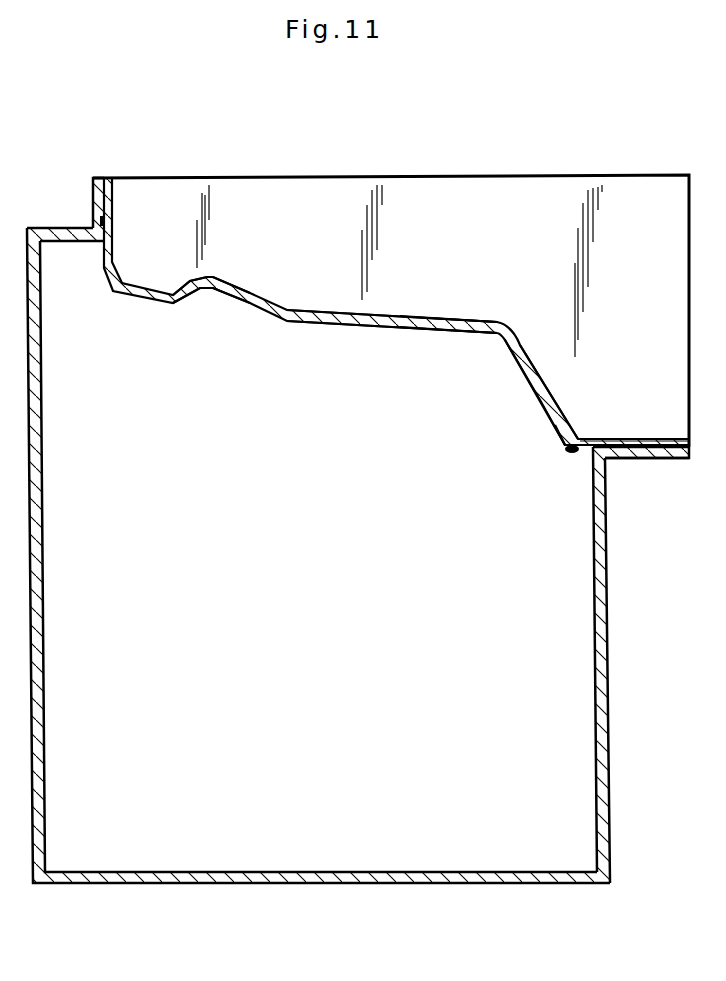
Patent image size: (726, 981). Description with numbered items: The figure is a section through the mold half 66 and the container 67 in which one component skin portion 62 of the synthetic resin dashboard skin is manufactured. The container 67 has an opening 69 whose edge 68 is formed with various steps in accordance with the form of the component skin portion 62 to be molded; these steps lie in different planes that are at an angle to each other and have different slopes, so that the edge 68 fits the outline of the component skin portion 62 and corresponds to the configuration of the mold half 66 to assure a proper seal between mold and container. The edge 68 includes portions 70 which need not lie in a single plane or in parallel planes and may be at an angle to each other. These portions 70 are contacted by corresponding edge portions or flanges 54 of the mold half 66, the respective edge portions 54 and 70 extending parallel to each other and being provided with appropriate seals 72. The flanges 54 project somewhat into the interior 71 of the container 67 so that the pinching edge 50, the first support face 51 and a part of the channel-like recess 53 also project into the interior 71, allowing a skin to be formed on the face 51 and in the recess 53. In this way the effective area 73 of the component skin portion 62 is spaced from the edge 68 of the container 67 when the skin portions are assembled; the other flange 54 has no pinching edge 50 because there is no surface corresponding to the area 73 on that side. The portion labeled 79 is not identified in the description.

The pinching edge 50 is at (560, 446).
The first support face 51 is at (572, 455).
The channel-like recess 53 is at (657, 437).
The edge portion or flange 54 is at (109, 202).
The component skin portion 62 is at (372, 332).
The mold half 66 is at (428, 205).
The container 67 is at (255, 886).
The edge of the container opening 68 is at (62, 228).
The opening of the container 69 is at (247, 308).
The edge portions of the container 70 is at (97, 192).
The interior of the container 71 is at (555, 690).
The seal 72 is at (110, 221).
The effective area 73 is at (560, 450).
The plate section 79 is at (448, 330).